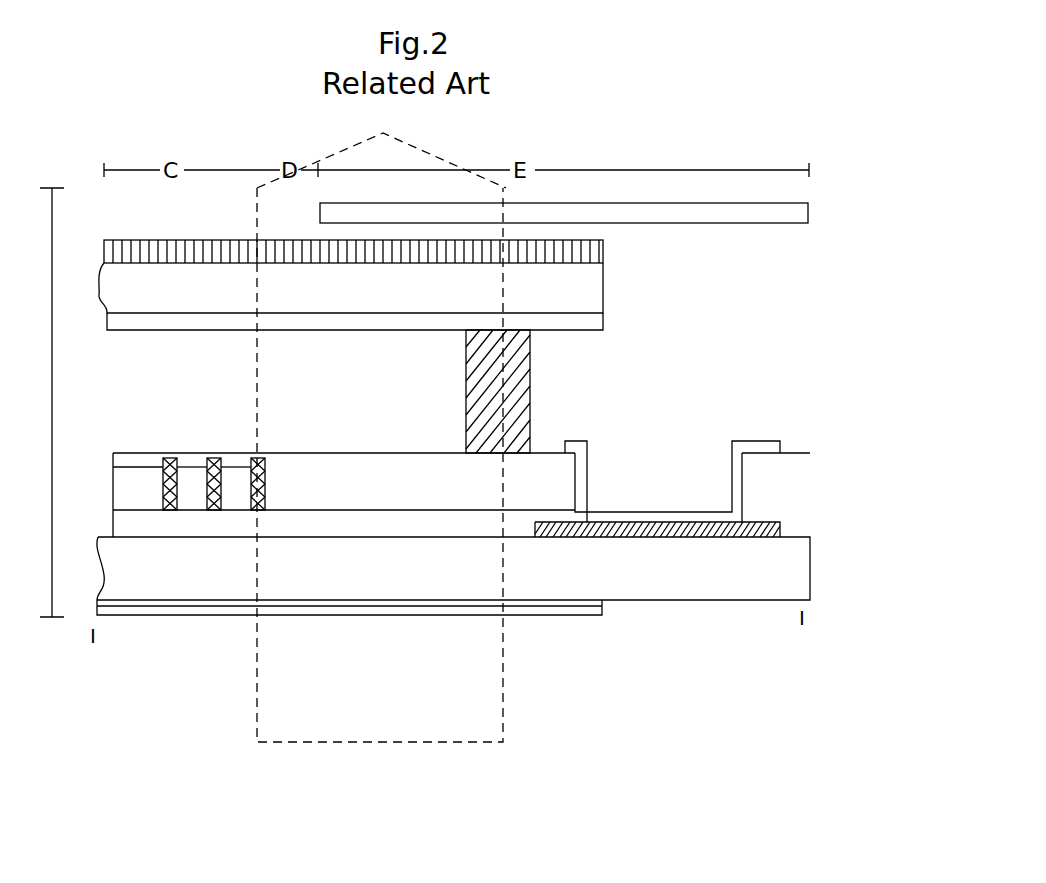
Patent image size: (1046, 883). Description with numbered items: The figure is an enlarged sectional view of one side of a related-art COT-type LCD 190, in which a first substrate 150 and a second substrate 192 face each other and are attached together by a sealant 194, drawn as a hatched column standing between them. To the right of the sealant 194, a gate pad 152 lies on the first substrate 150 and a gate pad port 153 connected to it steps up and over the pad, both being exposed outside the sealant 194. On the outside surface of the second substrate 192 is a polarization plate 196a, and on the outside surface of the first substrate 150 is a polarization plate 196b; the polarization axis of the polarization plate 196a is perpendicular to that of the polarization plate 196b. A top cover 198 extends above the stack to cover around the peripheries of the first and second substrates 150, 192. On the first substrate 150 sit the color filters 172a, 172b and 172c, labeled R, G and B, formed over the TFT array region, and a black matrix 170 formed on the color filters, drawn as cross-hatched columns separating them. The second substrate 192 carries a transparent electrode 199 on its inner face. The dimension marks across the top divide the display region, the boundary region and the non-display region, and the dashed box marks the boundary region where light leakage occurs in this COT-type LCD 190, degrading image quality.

The first substrate 150 is at (768, 578).
The gate pad 152 is at (645, 537).
The gate pad port 153 is at (752, 441).
The black matrix 170 is at (170, 445).
The color filter 172a is at (137, 467).
The color filter 172b is at (195, 467).
The color filter 172c is at (240, 458).
The COT-type LCD 190 is at (53, 402).
The second substrate 192 is at (590, 283).
The sealant 194 is at (530, 392).
The polarization plate 196a is at (212, 240).
The polarization plate 196b is at (182, 615).
The top cover 198 is at (808, 213).
The transparent electrode 199 is at (603, 318).